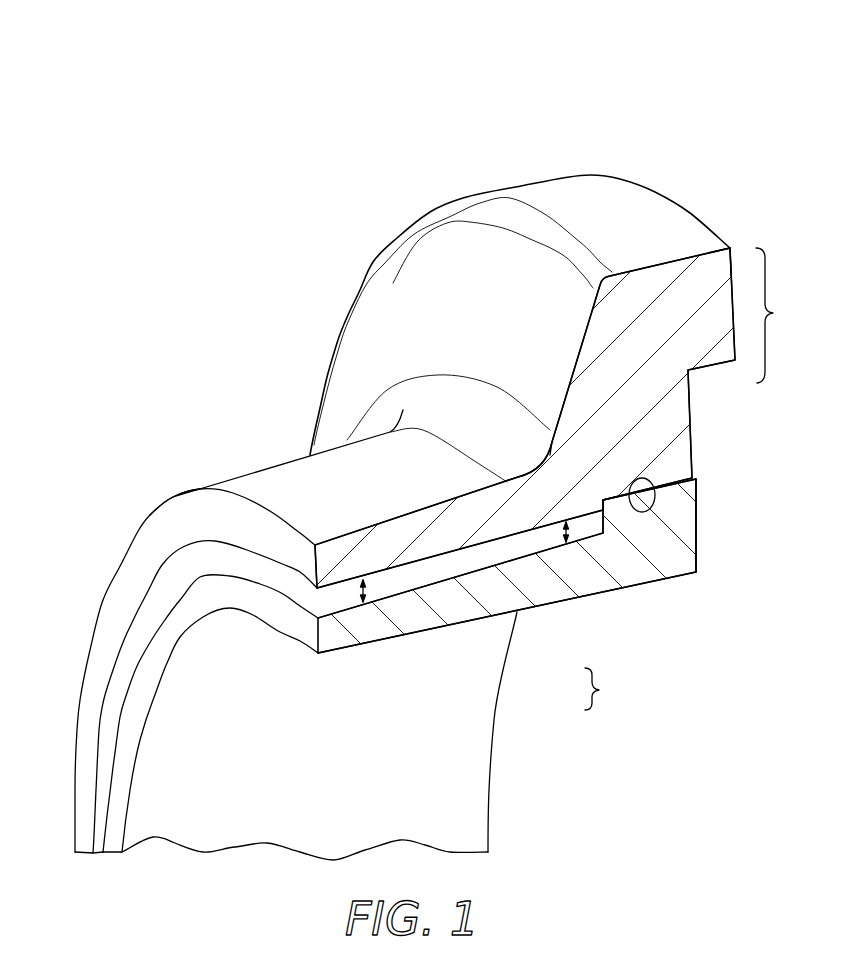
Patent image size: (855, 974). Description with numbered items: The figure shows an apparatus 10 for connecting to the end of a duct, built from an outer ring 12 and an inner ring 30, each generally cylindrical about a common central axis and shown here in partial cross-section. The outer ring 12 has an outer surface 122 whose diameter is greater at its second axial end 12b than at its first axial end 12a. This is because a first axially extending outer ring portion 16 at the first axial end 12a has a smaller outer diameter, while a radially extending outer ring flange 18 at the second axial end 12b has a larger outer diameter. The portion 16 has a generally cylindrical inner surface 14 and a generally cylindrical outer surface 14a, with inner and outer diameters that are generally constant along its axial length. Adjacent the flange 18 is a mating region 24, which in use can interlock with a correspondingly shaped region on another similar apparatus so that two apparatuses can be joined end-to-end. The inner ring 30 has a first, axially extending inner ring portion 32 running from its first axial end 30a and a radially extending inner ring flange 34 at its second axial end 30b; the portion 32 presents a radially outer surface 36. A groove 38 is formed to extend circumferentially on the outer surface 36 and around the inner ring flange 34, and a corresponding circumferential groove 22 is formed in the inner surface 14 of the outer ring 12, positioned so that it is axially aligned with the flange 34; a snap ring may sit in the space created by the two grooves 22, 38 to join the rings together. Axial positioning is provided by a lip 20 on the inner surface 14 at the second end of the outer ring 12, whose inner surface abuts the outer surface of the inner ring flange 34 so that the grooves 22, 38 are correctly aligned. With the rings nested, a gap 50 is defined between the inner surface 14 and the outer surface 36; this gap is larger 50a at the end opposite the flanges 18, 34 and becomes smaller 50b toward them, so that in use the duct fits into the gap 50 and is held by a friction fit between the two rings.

The apparatus 10 is at (674, 86).
The outer ring 12 is at (508, 186).
The first axial end of the outer ring 12a is at (173, 497).
The second axial end of the outer ring 12b is at (733, 248).
The inner surface 14 is at (201, 547).
The outer surface of first outer ring portion 14a is at (292, 470).
The first axially extending outer ring portion 16 is at (405, 537).
The outer ring flange 18 is at (655, 288).
The lip 20 is at (602, 510).
The groove 22 is at (660, 474).
The mating region 24 is at (781, 315).
The inner ring 30 is at (648, 594).
The first axial end of the inner ring 30a is at (133, 707).
The second axial end of the inner ring 30b is at (697, 549).
The first inner ring portion 32 is at (412, 630).
The inner ring flange 34 is at (647, 530).
The outer surface of the inner ring 36 is at (316, 606).
The groove 38 is at (656, 487).
The gap 50 is at (495, 616).
The larger gap portion 50a is at (400, 598).
The smaller gap portion 50b is at (560, 535).
The outer surface of the outer ring 122 is at (340, 336).